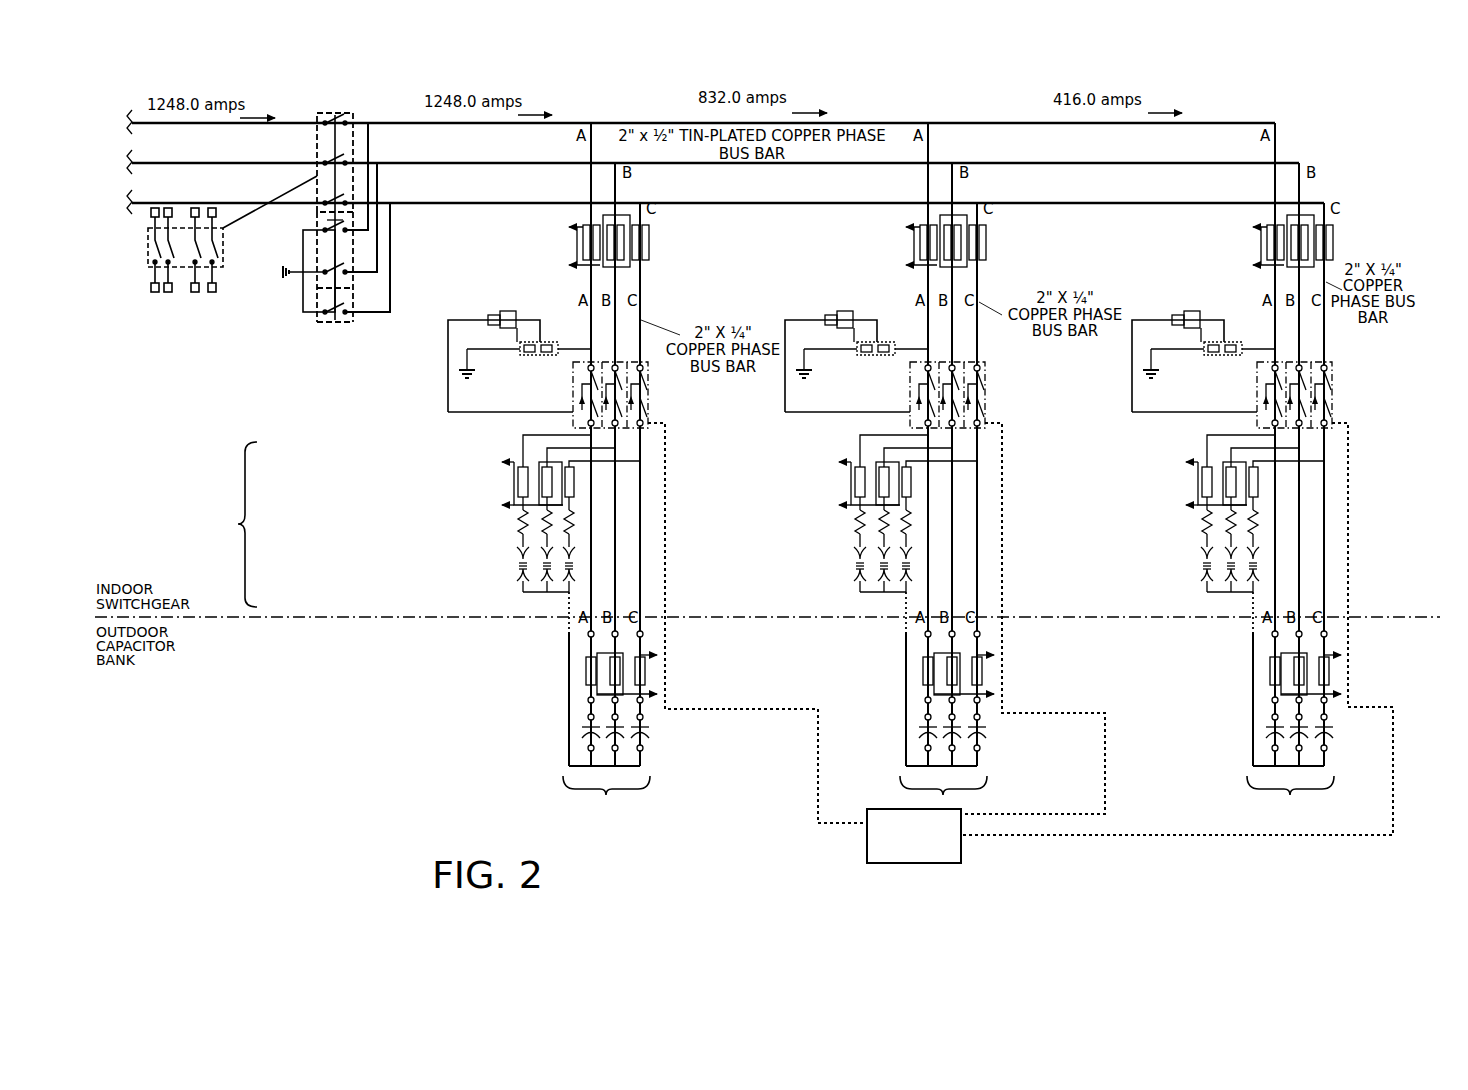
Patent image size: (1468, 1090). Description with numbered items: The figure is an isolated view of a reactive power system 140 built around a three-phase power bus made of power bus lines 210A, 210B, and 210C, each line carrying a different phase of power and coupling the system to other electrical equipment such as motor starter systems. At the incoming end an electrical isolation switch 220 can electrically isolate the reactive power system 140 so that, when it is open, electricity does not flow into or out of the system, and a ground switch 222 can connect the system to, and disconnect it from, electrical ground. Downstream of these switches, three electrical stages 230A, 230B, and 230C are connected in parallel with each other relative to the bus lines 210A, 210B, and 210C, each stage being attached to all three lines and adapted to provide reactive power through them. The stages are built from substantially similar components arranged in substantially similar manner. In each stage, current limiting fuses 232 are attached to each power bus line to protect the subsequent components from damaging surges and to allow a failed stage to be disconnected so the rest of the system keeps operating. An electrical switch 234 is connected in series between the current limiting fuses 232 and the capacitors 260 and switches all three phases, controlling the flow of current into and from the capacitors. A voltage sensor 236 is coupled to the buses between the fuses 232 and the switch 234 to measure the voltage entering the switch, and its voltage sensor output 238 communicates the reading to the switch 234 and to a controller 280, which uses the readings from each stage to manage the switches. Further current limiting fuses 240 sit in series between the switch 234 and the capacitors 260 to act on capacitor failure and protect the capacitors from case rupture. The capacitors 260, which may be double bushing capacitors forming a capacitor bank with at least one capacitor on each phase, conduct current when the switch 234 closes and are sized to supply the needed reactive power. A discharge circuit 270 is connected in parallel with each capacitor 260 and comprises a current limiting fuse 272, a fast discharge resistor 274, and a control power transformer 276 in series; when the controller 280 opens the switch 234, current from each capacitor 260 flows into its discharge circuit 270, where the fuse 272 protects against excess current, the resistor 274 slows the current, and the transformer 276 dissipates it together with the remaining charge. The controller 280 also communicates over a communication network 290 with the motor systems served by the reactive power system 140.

The reactive power system 140 is at (182, 850).
The power bus line 210A is at (574, 122).
The power bus line 210B is at (616, 162).
The power bus line 210C is at (752, 205).
The electrical isolation switch 220 is at (320, 118).
The ground switch 222 is at (315, 322).
The electrical stage 230A is at (609, 477).
The electrical stage 230B is at (946, 467).
The electrical stage 230C is at (1293, 464).
The current limiting fuses 232 is at (652, 234).
The electrical switch 234 is at (650, 388).
The voltage sensor 236 is at (520, 348).
The voltage sensor output 238 is at (488, 316).
The current limiting fuses 240 is at (643, 656).
The capacitors 260 is at (580, 727).
The discharge circuit 270 is at (761, 530).
The current limiting fuse 272 is at (513, 450).
The fast discharge resistor 274 is at (513, 523).
The control power transformer 276 is at (517, 565).
The controller 280 is at (914, 836).
The communication network 290 is at (817, 780).